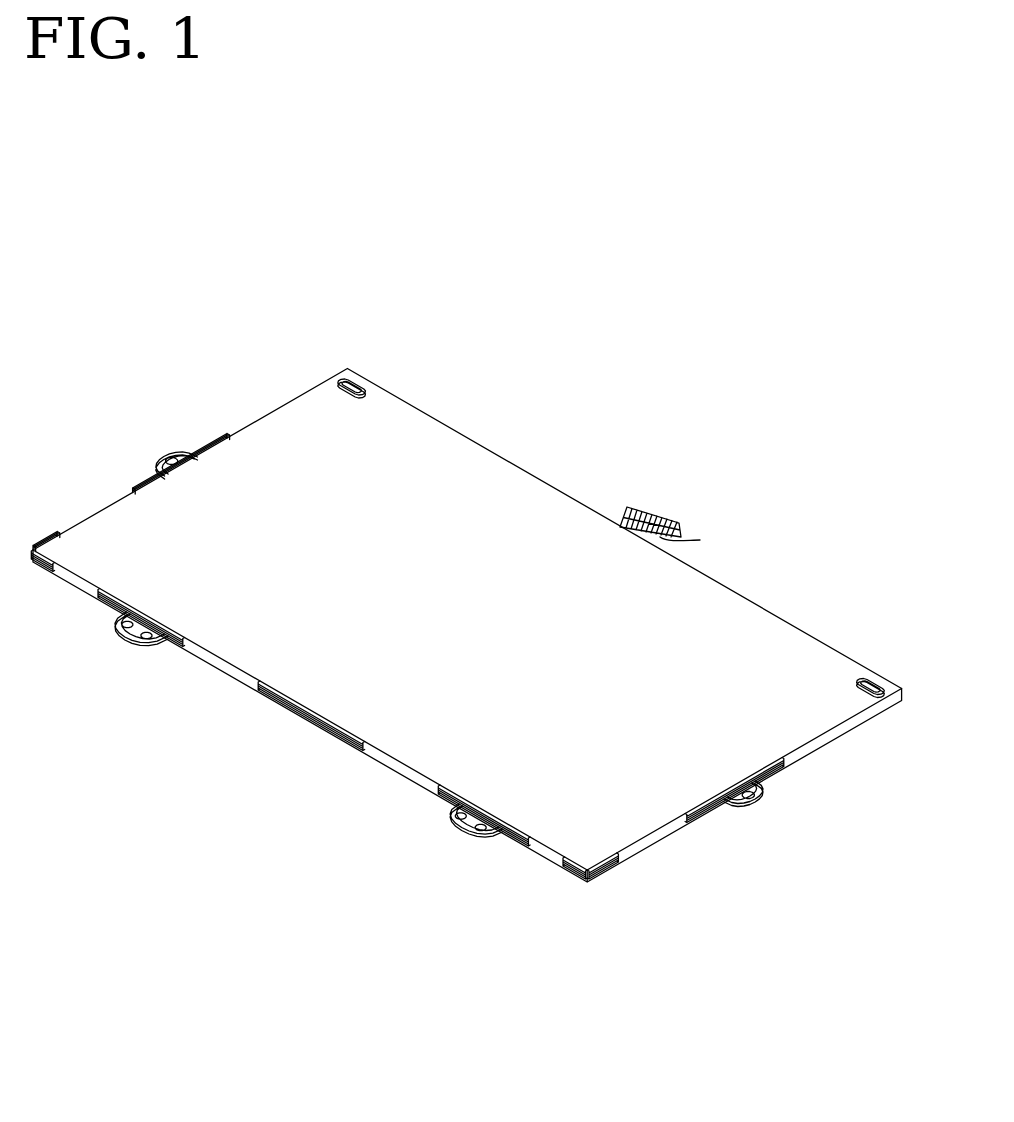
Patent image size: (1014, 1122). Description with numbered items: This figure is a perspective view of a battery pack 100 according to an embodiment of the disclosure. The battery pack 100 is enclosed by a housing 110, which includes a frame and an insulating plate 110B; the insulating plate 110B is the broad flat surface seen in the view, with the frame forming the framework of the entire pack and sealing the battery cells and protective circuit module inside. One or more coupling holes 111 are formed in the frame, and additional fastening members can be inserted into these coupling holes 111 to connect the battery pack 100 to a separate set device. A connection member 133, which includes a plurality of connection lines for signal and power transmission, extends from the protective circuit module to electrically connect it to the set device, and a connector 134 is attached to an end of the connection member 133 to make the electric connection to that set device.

The battery pack 100 is at (97, 353).
The housing 110 is at (650, 840).
The insulating plate 110B is at (802, 648).
The coupling hole 111 is at (747, 782).
The connection member 133 is at (700, 540).
The connector 134 is at (660, 514).